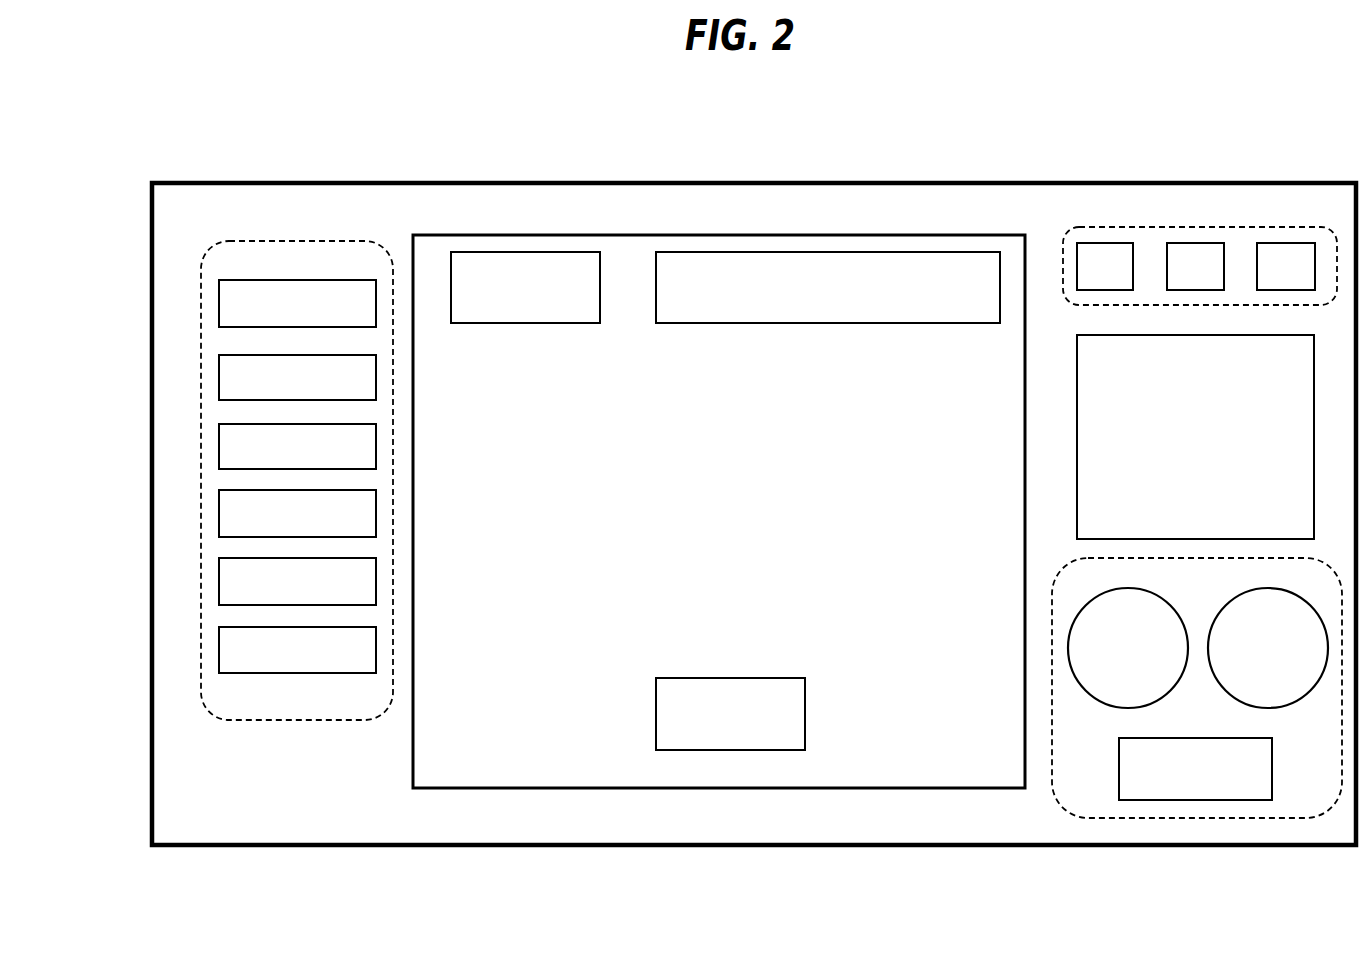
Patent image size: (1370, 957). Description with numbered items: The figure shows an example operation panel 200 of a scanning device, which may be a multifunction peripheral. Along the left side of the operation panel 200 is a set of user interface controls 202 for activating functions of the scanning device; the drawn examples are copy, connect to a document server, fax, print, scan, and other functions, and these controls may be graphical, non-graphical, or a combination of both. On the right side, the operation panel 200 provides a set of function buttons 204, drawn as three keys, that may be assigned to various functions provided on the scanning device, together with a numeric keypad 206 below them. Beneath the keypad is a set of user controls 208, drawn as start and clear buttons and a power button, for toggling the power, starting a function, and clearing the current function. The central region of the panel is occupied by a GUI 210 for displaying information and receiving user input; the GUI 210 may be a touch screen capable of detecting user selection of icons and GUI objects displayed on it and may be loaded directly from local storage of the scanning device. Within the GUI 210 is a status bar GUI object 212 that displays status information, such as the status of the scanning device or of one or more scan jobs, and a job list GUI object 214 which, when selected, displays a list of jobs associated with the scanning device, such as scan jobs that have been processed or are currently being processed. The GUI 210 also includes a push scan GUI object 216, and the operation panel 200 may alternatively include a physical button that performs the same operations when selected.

The operation panel 200 is at (289, 123).
The user interface controls 202 is at (201, 337).
The function buttons 204 is at (1152, 227).
The numeric keypad 206 is at (1177, 467).
The user controls 208 is at (1168, 819).
The GUI 210 is at (698, 233).
The status bar GUI object 212 is at (855, 263).
The job list GUI object 214 is at (513, 263).
The push scan GUI object 216 is at (762, 750).